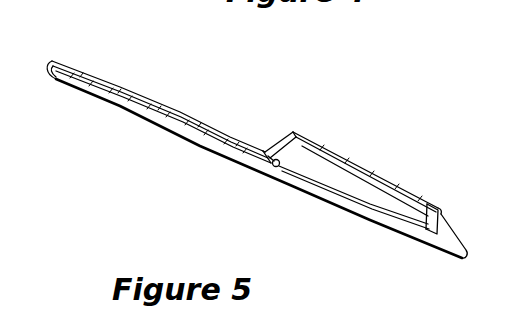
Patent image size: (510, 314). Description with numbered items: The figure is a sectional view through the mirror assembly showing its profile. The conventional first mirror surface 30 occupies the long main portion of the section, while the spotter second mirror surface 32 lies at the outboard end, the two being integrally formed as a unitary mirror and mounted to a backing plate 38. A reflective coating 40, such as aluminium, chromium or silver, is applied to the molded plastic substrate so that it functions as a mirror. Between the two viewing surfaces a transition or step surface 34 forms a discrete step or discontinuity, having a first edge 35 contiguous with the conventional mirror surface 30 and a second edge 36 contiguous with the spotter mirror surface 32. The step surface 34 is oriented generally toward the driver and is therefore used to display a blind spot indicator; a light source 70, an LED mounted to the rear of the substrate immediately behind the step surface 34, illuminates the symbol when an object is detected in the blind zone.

The first mirror surface 30 is at (117, 97).
The second mirror surface 32 is at (412, 190).
The transition surface 34 is at (270, 143).
The first edge 35 is at (258, 150).
The second edge 36 is at (295, 132).
The backing plate 38 is at (360, 221).
The reflective coating 40 is at (86, 74).
The light source 70 is at (272, 166).